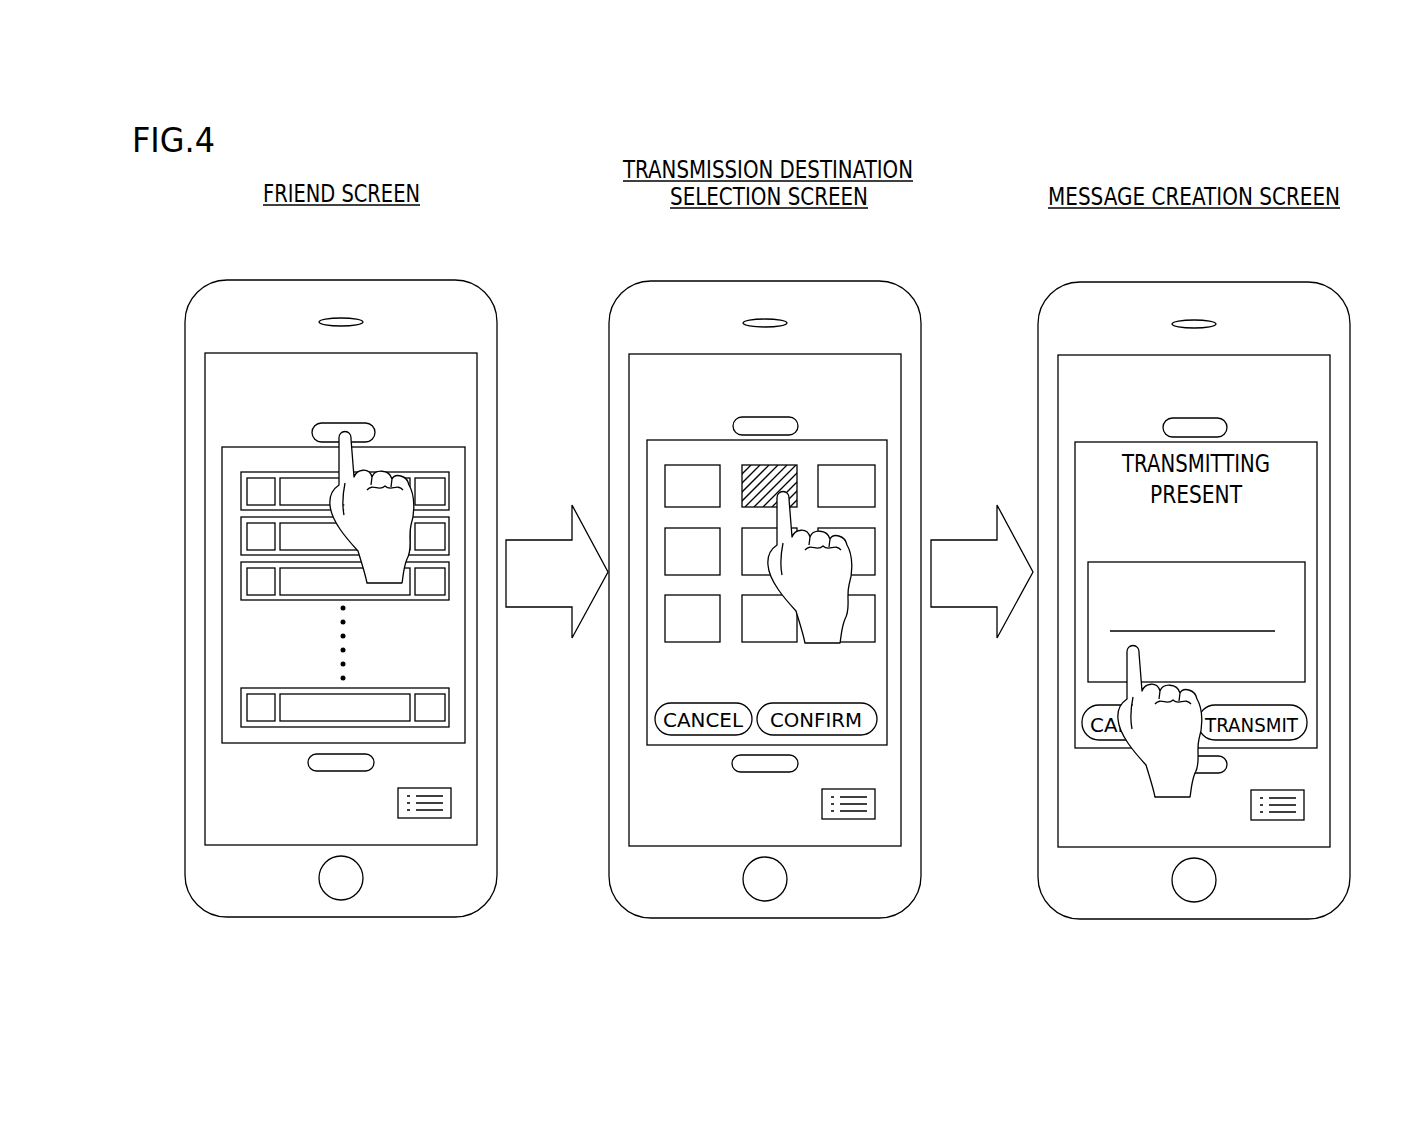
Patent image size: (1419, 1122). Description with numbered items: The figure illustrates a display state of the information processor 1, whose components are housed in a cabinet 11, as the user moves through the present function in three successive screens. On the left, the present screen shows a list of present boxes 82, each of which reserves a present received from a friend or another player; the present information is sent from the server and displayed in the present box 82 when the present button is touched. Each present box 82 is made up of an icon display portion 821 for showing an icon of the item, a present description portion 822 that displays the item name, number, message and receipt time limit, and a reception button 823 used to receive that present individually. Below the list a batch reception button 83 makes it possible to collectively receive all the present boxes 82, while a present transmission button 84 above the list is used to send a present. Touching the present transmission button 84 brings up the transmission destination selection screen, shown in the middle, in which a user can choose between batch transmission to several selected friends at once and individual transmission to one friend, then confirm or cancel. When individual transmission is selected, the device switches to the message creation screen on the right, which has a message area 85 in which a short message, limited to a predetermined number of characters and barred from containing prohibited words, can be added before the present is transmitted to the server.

The information processor 1 is at (499, 292).
The cabinet 11 is at (344, 280).
The present box 82 is at (450, 564).
The icon display portion 821 is at (267, 584).
The present description portion 822 is at (322, 586).
The reception button 823 is at (427, 584).
The batch reception button 83 is at (308, 763).
The present transmission button 84 is at (312, 433).
The message area 85 is at (1278, 562).